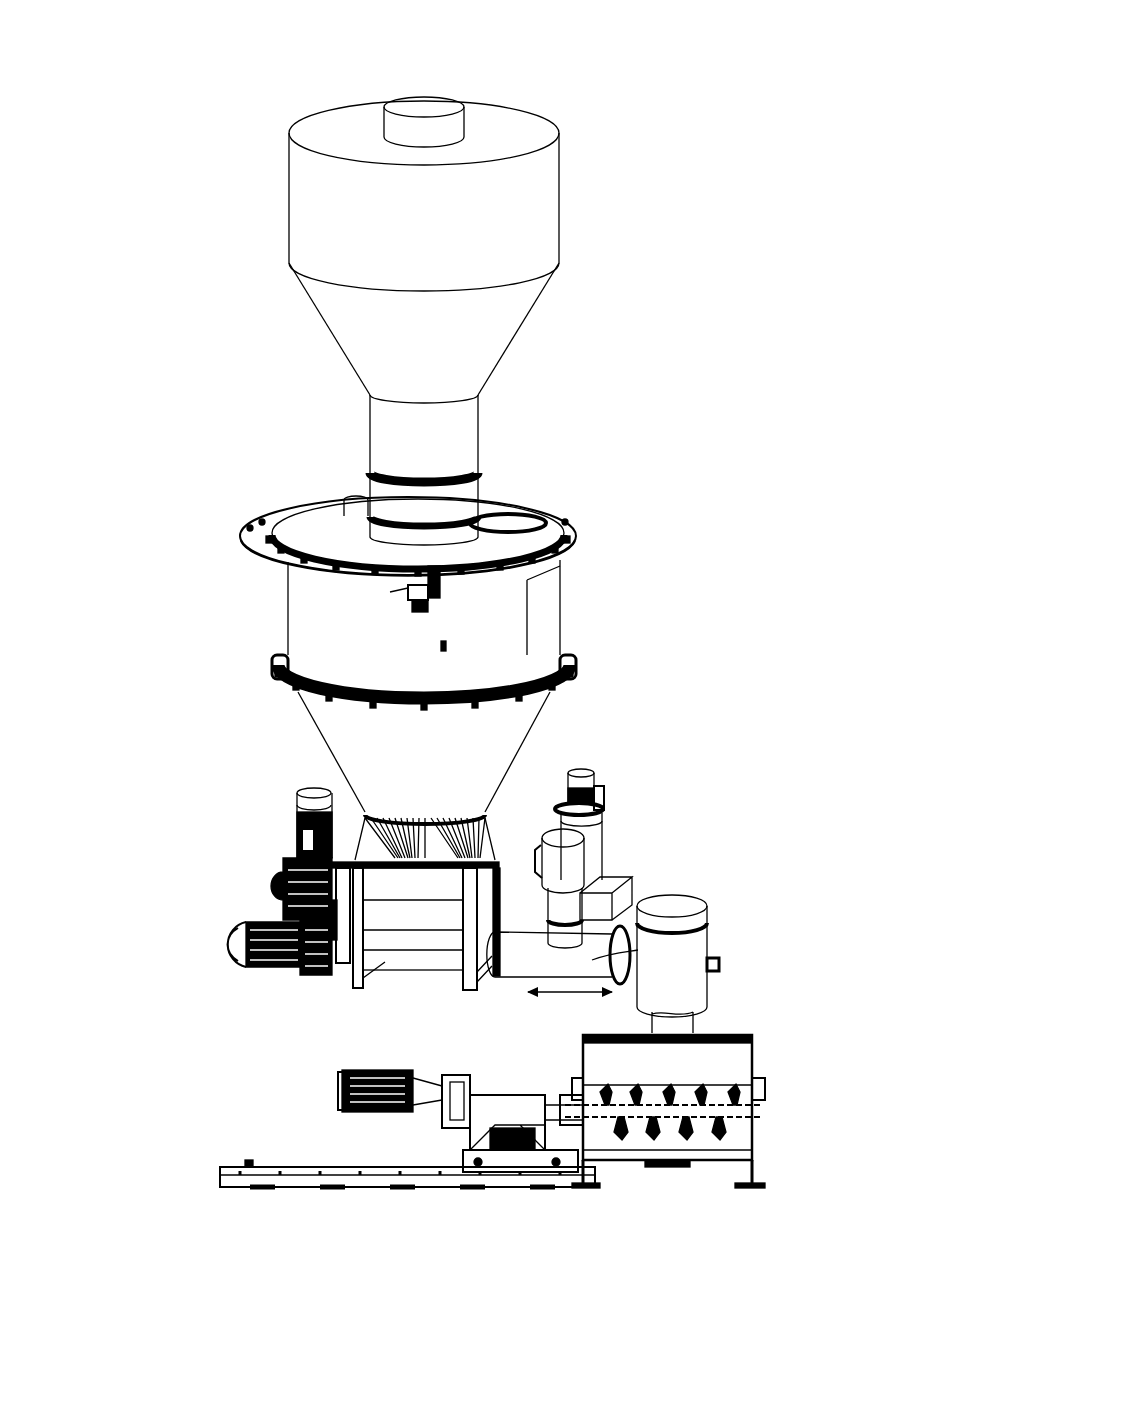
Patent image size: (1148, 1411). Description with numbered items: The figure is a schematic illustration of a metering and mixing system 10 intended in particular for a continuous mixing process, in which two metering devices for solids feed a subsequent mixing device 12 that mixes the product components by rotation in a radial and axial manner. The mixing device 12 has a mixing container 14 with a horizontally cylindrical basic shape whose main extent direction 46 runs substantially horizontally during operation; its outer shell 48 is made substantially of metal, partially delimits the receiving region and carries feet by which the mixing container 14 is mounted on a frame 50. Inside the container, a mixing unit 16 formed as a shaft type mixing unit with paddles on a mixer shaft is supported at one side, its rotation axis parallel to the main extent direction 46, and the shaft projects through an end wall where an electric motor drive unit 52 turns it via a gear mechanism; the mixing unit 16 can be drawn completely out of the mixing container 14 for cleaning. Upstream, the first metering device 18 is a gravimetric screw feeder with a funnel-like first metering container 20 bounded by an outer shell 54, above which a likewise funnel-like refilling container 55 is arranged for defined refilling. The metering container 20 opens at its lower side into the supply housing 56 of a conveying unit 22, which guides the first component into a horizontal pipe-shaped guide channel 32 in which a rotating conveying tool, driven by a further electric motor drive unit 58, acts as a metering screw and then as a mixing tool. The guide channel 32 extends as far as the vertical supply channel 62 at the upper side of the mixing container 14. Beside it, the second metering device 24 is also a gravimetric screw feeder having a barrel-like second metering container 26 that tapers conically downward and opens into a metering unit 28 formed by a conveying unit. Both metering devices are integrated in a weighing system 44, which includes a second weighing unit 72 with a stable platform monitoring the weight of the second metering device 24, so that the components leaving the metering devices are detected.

The metering and mixing system 10 is at (293, 98).
The mixing device 12 is at (368, 1234).
The mixing container 14 is at (645, 1190).
The mixing unit 16 is at (675, 1135).
The first metering device 18 is at (175, 665).
The first metering container 20 is at (368, 632).
The conveying unit 22 is at (345, 968).
The second metering device 24 is at (651, 738).
The second metering container 26 is at (596, 832).
The metering unit 28 is at (566, 853).
The guide channel 32 is at (642, 960).
The weighing system 44 is at (640, 892).
The main extent direction 46 is at (567, 1000).
The outer shell 48 is at (702, 1130).
The frame 50 is at (412, 1188).
The drive unit 52 is at (342, 1088).
The outer shell 54 is at (368, 748).
The refilling container 55 is at (355, 218).
The supply housing 56 is at (403, 913).
The drive unit 58 is at (238, 952).
The supply channel 62 is at (674, 942).
The second weighing unit 72 is at (628, 882).